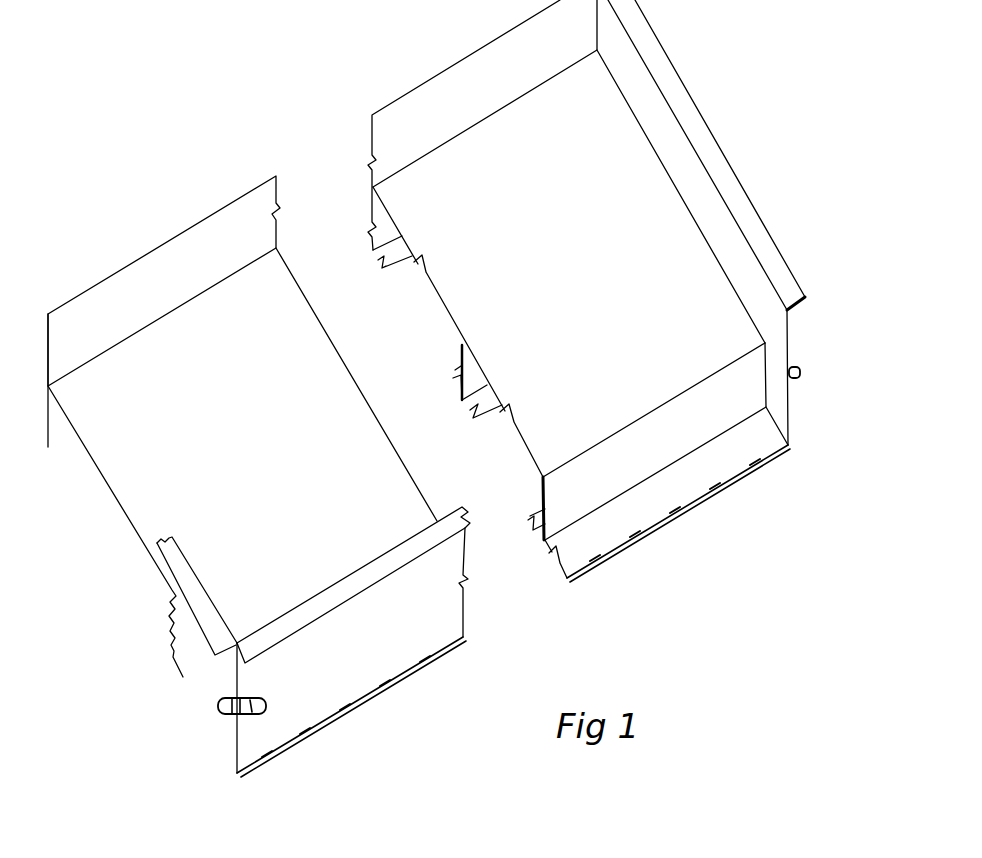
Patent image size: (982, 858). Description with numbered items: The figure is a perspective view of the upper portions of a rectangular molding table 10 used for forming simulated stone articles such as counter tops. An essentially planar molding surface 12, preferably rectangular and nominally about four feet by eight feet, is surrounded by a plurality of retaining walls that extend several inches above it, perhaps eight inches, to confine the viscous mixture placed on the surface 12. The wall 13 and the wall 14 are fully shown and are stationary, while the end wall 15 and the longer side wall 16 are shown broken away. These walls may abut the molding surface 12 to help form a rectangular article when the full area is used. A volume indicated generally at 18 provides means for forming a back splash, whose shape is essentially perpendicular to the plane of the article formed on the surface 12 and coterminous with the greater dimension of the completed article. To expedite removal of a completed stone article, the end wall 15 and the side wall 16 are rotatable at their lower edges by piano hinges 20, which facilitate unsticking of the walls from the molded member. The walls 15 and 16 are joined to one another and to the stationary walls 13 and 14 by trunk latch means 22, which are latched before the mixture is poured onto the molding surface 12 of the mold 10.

The molding table 10 is at (303, 116).
The molding surface 12 is at (337, 479).
The retaining wall 13 is at (219, 271).
The retaining wall 14 is at (737, 258).
The end wall 15 is at (195, 670).
The side wall 16 is at (378, 633).
The back splash forming volume 18 is at (627, 460).
The piano hinge 20 is at (211, 735).
The trunk latch means 22 is at (270, 699).